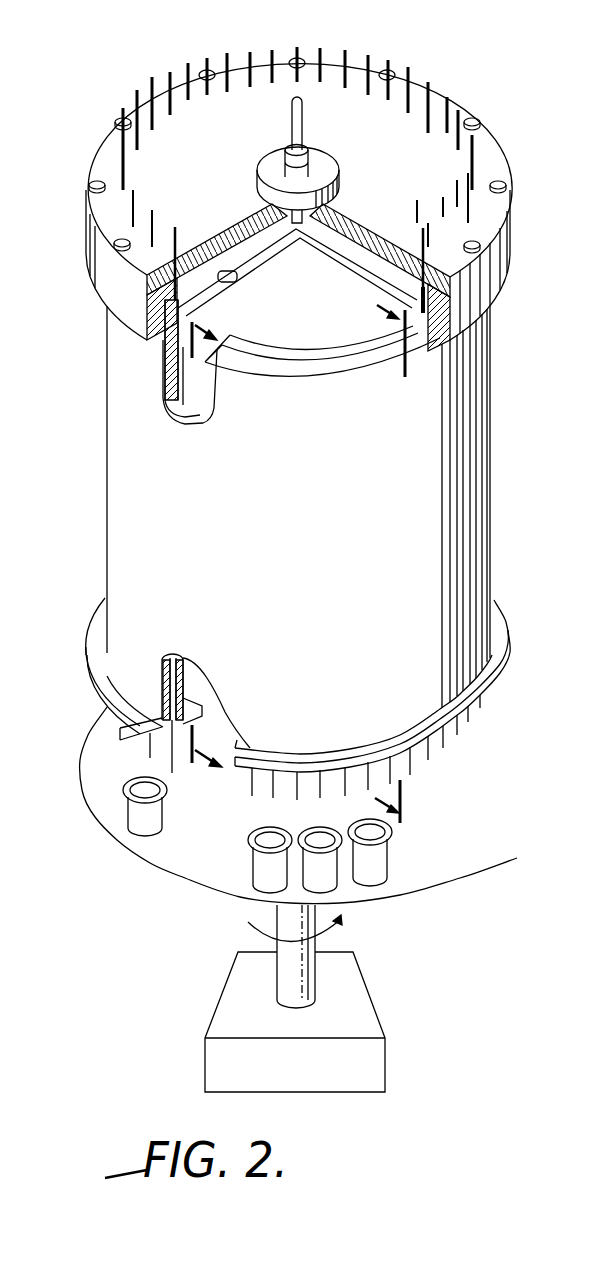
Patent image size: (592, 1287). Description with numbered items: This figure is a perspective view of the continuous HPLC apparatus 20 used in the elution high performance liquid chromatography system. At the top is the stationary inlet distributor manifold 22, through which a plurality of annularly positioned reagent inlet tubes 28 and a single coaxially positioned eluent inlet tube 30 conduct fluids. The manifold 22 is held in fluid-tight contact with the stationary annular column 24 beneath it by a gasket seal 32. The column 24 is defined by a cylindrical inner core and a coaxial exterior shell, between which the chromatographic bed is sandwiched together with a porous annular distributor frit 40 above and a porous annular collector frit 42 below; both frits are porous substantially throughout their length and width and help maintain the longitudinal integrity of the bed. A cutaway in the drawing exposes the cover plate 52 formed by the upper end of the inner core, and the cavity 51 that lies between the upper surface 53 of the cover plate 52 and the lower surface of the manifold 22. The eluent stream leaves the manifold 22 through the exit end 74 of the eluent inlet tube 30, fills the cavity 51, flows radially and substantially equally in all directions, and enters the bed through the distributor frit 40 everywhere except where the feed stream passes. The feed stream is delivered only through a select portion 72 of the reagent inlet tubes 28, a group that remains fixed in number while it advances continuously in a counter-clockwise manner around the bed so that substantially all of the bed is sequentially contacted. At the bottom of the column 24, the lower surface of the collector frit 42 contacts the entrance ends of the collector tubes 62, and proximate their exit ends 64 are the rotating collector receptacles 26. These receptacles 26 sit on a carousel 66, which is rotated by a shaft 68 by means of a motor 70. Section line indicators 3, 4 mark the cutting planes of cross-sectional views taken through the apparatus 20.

The continuous HPLC apparatus 20 is at (317, 417).
The stationary inlet distributor manifold 22 is at (522, 243).
The stationary annular column 24 is at (487, 505).
The rotating collector receptacles 26 is at (130, 820).
The reagent inlet tubes 28 is at (132, 202).
The eluent inlet tube 30 is at (303, 118).
The gasket seal 32 is at (107, 338).
The porous annular distributor frit 40 is at (163, 352).
The porous annular collector frit 42 is at (160, 697).
The cavity 51 is at (340, 243).
The cover plate 52 is at (262, 266).
The upper surface 53 is at (226, 282).
The collector tubes 62 is at (453, 766).
The exit ends 64 is at (120, 733).
The carousel 66 is at (163, 868).
The shaft 68 is at (313, 968).
The motor 70 is at (382, 1063).
The select portion of the reagent inlet tubes 72 is at (280, 38).
The exit end of the eluent inlet tube 74 is at (290, 213).
The section line 3 is at (383, 564).
The section line 4 is at (208, 559).